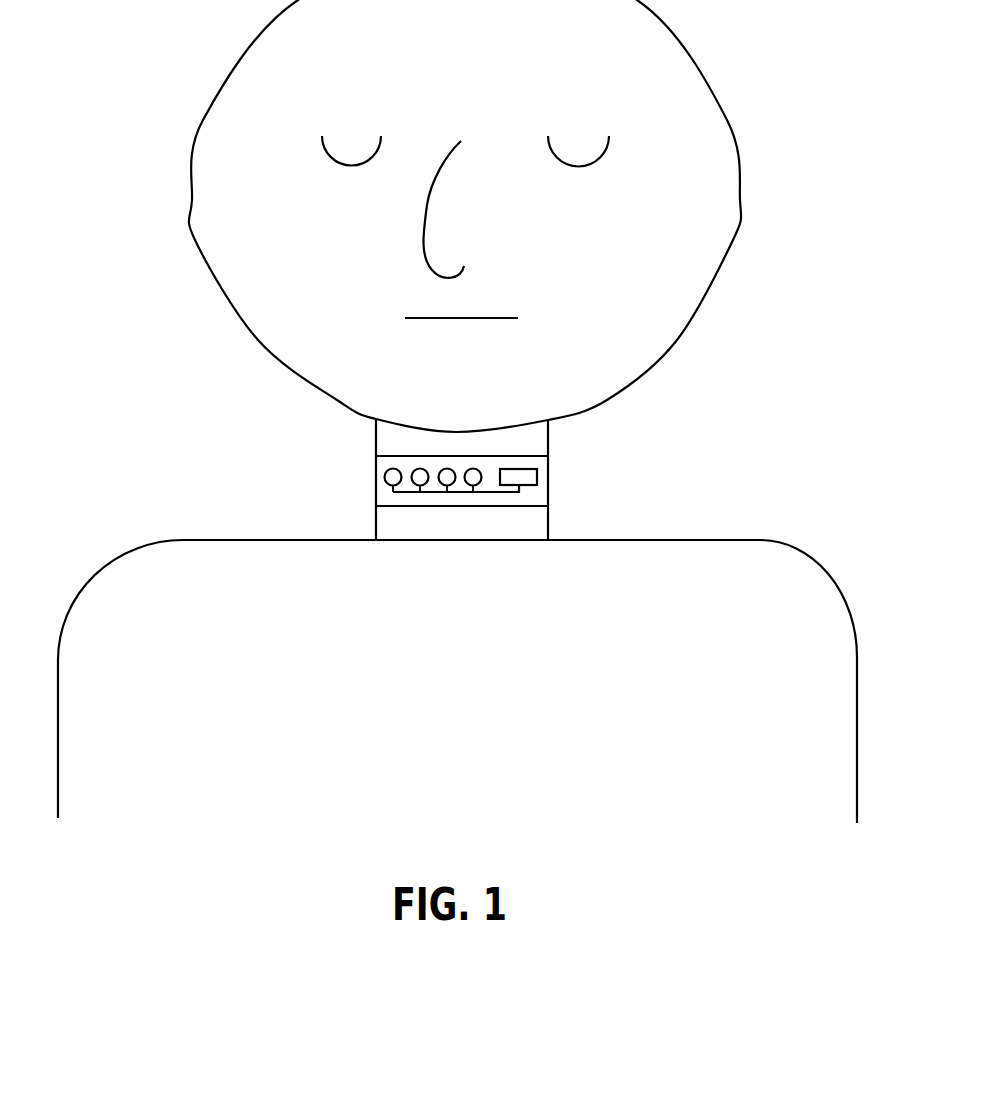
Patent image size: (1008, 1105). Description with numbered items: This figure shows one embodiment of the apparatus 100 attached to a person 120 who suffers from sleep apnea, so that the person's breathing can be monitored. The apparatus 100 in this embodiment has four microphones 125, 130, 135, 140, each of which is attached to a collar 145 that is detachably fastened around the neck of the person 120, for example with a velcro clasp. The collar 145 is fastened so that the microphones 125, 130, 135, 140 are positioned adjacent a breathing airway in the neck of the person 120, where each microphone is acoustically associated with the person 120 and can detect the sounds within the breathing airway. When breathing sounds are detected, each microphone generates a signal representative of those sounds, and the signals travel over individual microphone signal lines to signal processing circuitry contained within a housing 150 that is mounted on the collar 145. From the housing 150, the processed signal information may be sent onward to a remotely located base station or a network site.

The apparatus 100 is at (226, 467).
The person 120 is at (763, 540).
The microphone 125 is at (385, 475).
The microphone 130 is at (420, 468).
The microphone 135 is at (452, 483).
The microphone 140 is at (473, 468).
The collar 145 is at (378, 496).
The housing 150 is at (530, 476).